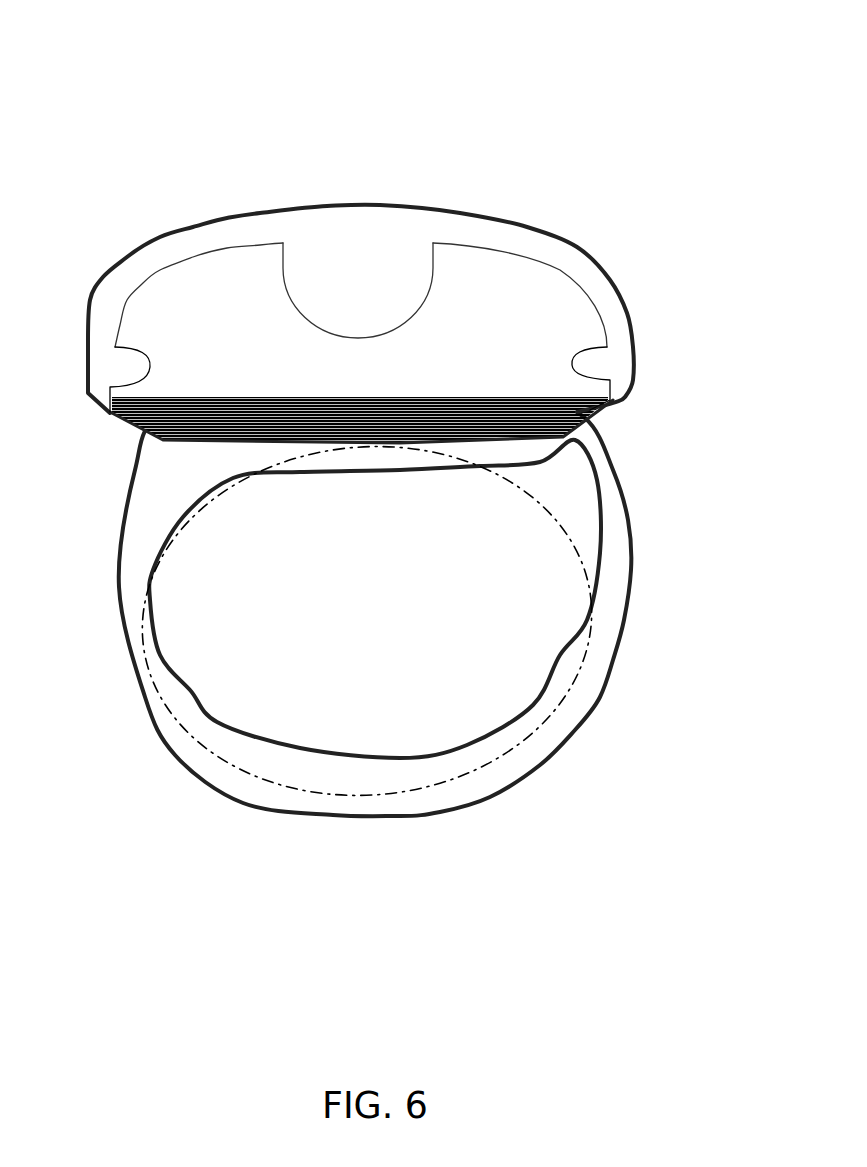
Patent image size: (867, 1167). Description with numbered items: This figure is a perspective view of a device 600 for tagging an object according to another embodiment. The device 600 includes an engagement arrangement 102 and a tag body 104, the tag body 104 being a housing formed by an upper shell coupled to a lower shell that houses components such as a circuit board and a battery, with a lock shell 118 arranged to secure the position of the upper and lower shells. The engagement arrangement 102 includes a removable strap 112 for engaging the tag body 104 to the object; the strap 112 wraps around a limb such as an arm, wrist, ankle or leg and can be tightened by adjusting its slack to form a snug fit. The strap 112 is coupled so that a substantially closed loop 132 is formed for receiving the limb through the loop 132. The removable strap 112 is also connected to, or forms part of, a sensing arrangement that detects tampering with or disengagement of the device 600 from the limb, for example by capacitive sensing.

The device for tagging an object 600 is at (127, 97).
The engagement arrangement 102 is at (400, 714).
The tag body 104 is at (427, 263).
The removable strap 112 is at (287, 813).
The lock shell 118 is at (358, 262).
The loop 132 is at (227, 763).